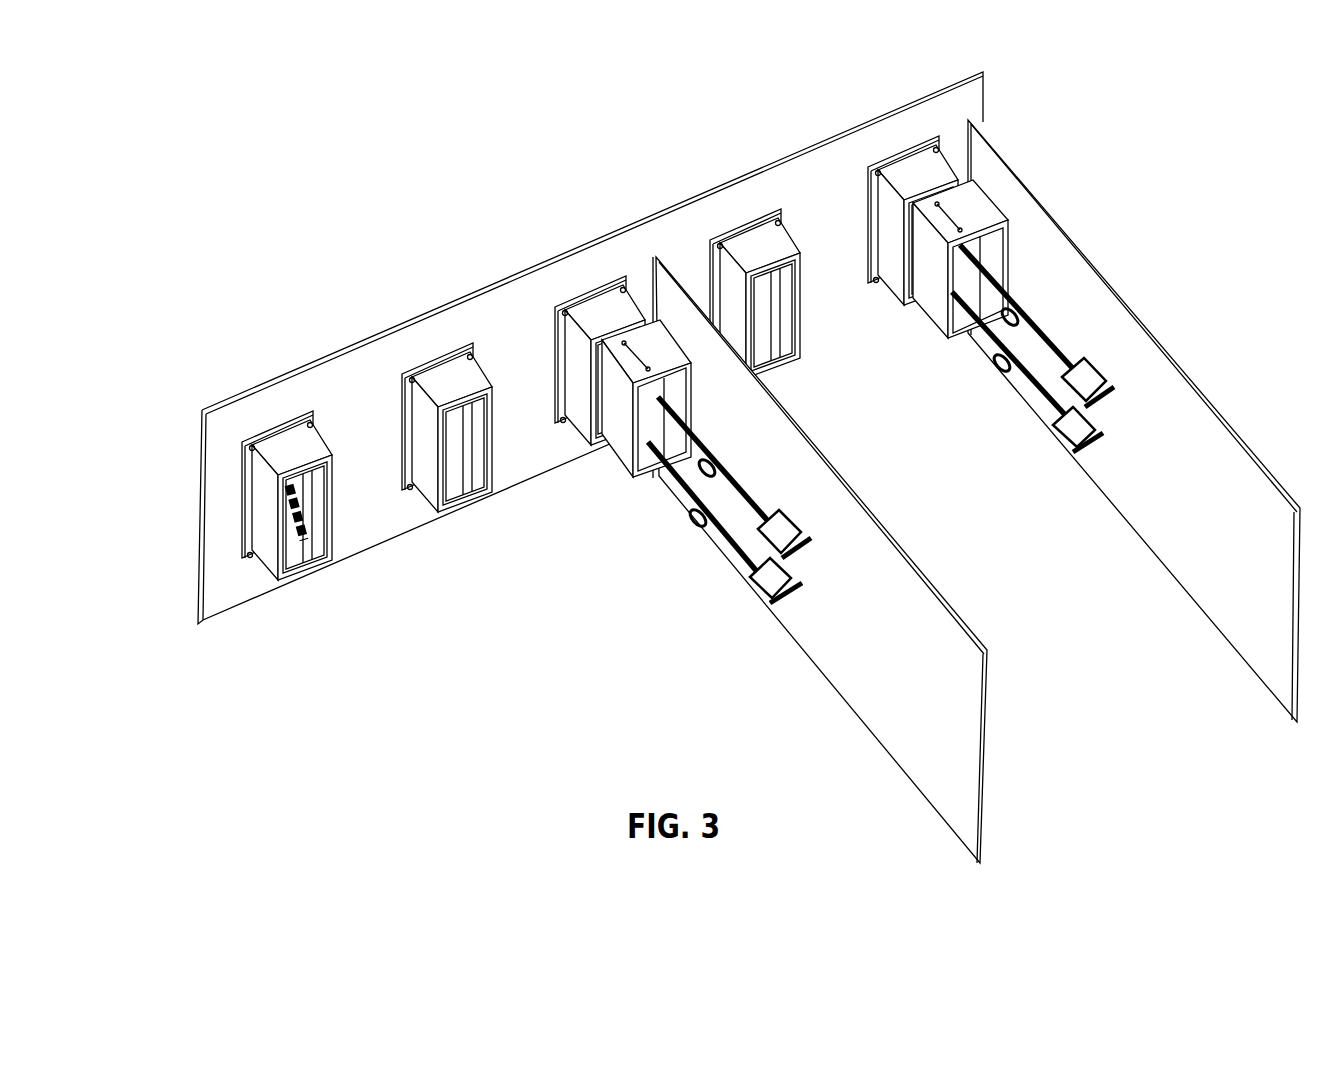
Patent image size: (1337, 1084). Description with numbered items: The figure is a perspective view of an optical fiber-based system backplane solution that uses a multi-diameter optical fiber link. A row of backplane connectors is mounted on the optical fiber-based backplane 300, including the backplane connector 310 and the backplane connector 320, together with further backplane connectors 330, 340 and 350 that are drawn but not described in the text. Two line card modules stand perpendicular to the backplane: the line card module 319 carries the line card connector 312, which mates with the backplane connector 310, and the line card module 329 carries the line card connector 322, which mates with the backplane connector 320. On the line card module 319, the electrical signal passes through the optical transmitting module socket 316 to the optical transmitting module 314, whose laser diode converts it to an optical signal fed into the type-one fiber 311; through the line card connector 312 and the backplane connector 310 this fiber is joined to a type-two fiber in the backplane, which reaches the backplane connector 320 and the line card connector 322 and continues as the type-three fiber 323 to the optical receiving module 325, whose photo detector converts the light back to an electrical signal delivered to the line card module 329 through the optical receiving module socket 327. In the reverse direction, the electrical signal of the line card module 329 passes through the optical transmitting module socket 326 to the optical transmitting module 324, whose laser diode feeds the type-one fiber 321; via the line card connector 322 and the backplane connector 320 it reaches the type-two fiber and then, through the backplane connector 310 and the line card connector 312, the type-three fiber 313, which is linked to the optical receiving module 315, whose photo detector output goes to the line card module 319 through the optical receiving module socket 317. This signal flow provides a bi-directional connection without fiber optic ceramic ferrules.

The optical fiber-based backplane 300 is at (590, 348).
The backplane connector 310 is at (903, 143).
The type-1 fiber 311 is at (1022, 387).
The line card connector 312 is at (986, 187).
The type-3 fiber 313 is at (1032, 298).
The optical transmitting module 314 is at (1058, 450).
The optical receiving module 315 is at (1092, 350).
The optical transmitting module socket 316 is at (1108, 461).
The optical receiving module socket 317 is at (1130, 392).
The line card module 319 is at (1134, 421).
The backplane connector 320 is at (570, 283).
The type-1 fiber 321 is at (710, 538).
The line card connector 322 is at (626, 488).
The type-3 fiber 323 is at (746, 462).
The optical transmitting module 324 is at (753, 595).
The optical receiving module 325 is at (793, 499).
The optical transmitting module socket 326 is at (805, 600).
The optical receiving module socket 327 is at (822, 540).
The line card module 329 is at (823, 560).
The receptacle connector 330 is at (750, 207).
The receptacle connector 340 is at (431, 354).
The receptacle connector with ferrules 350 is at (275, 412).